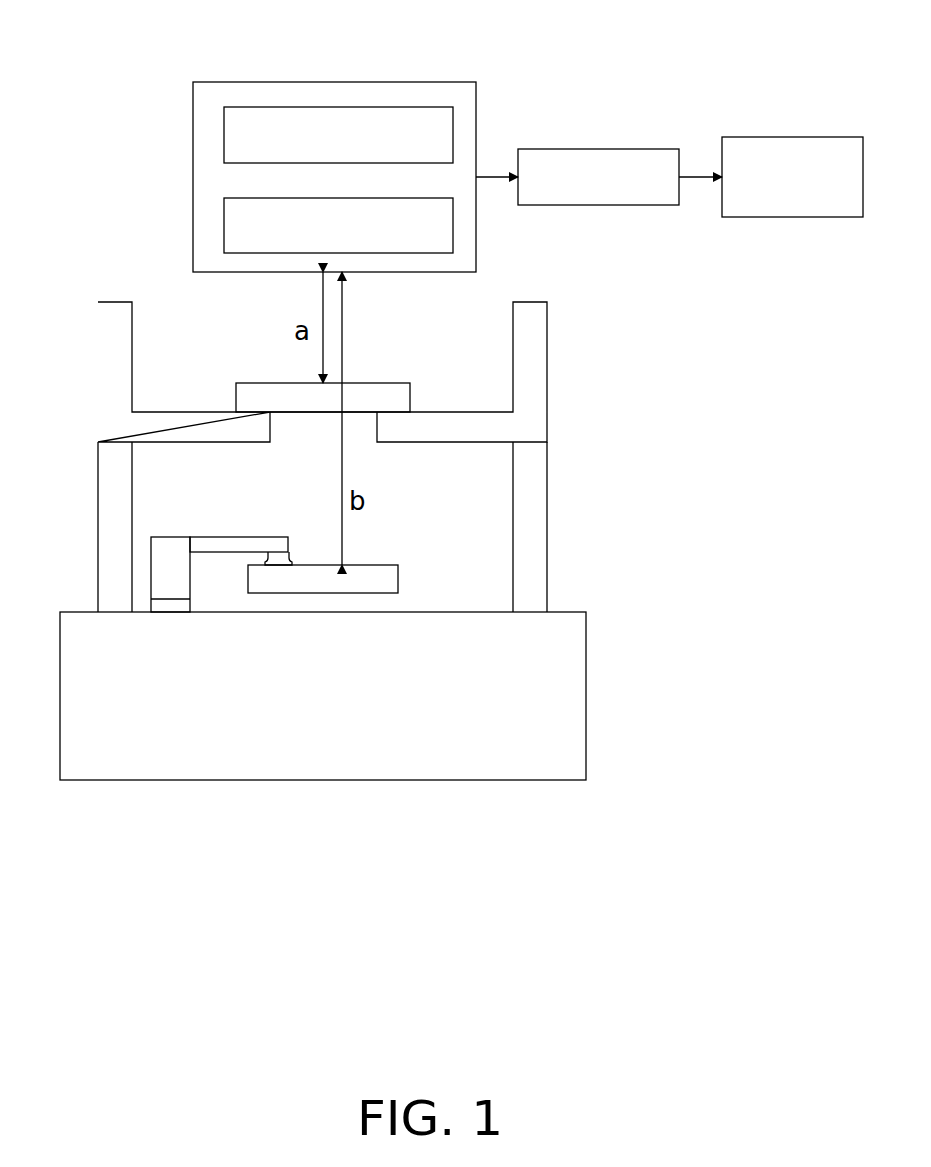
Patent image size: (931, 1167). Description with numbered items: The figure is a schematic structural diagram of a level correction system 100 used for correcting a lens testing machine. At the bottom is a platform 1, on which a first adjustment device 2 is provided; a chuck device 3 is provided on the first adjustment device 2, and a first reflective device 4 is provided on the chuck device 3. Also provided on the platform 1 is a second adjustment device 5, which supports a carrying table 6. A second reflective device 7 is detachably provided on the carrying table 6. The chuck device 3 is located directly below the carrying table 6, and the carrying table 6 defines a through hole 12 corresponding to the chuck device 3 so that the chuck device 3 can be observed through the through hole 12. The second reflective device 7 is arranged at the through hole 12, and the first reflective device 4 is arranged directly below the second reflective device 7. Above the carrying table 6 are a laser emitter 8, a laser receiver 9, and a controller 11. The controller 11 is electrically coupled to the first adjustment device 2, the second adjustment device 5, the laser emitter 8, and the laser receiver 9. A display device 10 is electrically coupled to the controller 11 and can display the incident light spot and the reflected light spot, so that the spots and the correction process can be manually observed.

The level correction system 100 is at (240, 33).
The platform 1 is at (565, 685).
The first adjustment device 2 is at (163, 601).
The chuck device 3 is at (237, 545).
The first reflective device 4 is at (385, 575).
The second adjustment device 5 is at (113, 485).
The carrying table 6 is at (105, 362).
The second reflective device 7 is at (382, 395).
The laser emitter 8 is at (224, 223).
The laser receiver 9 is at (224, 135).
The display device 10 is at (778, 137).
The controller 11 is at (563, 149).
The through hole 12 is at (303, 432).